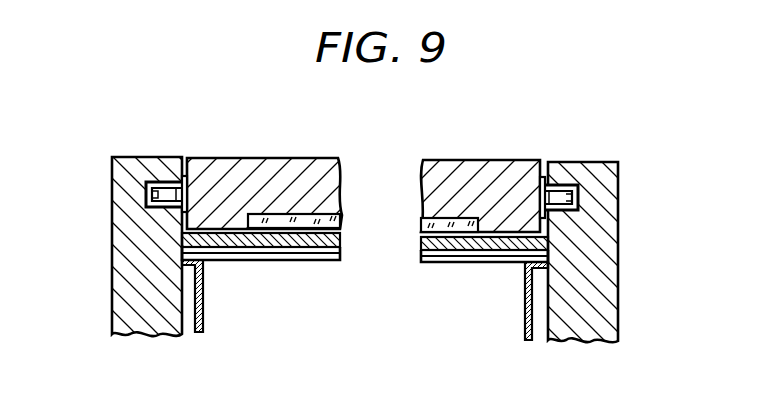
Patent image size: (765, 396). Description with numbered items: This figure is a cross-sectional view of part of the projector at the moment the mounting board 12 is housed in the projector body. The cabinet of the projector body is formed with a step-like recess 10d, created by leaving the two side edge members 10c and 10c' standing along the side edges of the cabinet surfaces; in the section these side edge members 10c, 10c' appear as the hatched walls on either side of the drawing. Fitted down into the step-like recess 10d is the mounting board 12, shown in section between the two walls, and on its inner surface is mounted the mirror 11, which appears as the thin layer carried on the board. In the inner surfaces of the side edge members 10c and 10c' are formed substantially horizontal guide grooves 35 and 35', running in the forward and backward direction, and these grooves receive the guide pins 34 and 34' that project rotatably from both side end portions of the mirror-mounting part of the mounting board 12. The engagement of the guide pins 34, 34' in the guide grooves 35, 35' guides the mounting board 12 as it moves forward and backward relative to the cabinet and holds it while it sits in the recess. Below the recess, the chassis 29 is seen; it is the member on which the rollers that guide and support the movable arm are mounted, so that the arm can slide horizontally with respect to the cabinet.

The side edge member 10c' is at (162, 217).
The side edge member 10c is at (583, 222).
The mounting board 12 is at (273, 157).
The mirror 11 is at (303, 222).
The step-like recess 10d is at (224, 226).
The chassis 29 is at (526, 322).
The guide pin 34' is at (112, 201).
The guide groove 35' is at (115, 237).
The guide pin 34 is at (610, 204).
The guide groove 35 is at (609, 237).